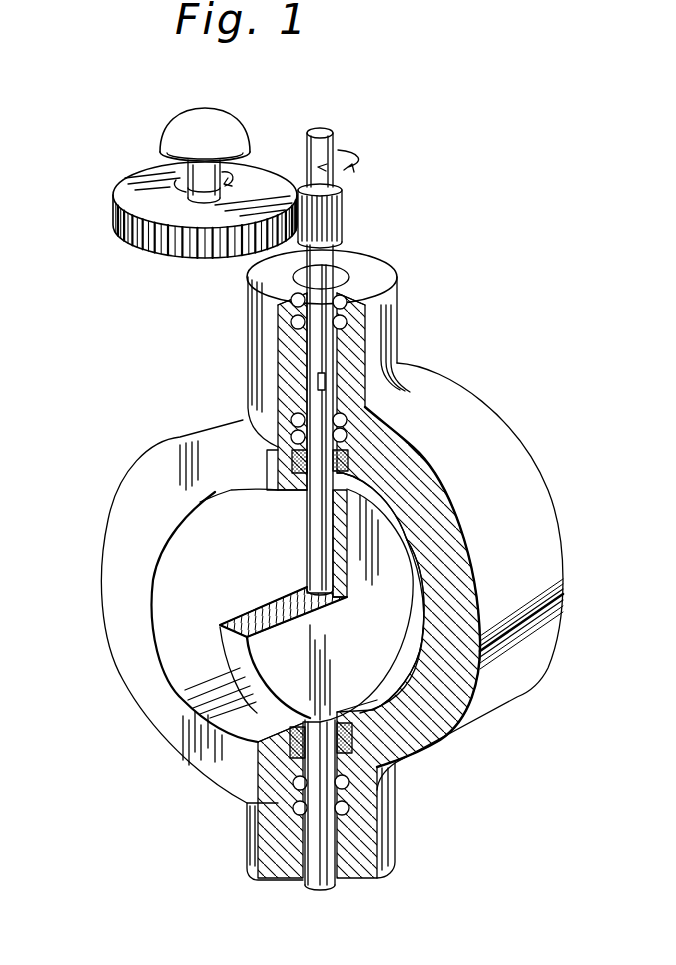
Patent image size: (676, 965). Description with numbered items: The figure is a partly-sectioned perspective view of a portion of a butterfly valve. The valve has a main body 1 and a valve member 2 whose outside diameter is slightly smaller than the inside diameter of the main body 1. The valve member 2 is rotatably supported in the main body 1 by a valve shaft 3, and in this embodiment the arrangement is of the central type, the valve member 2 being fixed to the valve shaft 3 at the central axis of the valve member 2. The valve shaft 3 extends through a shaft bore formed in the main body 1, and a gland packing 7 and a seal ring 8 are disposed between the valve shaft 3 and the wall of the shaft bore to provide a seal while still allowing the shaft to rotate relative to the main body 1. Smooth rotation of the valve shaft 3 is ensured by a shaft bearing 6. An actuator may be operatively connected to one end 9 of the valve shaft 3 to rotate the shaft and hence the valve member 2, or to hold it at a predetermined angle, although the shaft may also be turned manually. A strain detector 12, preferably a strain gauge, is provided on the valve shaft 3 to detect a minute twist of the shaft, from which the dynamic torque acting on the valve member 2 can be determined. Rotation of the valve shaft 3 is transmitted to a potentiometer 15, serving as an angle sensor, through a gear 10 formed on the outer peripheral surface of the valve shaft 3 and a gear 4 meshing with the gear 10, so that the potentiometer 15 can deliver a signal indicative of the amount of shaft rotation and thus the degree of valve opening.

The main body 1 is at (520, 683).
The valve member 2 is at (290, 633).
The valve shaft 3 is at (318, 528).
The gear 4 is at (152, 228).
The shaft bearing 6 is at (291, 322).
The gland packing 7 is at (350, 462).
The seal ring 8 is at (258, 780).
The one end of the valve shaft 9 is at (337, 172).
The gear 10 is at (342, 227).
The strain detector 12 is at (325, 383).
The potentiometer 15 is at (173, 130).